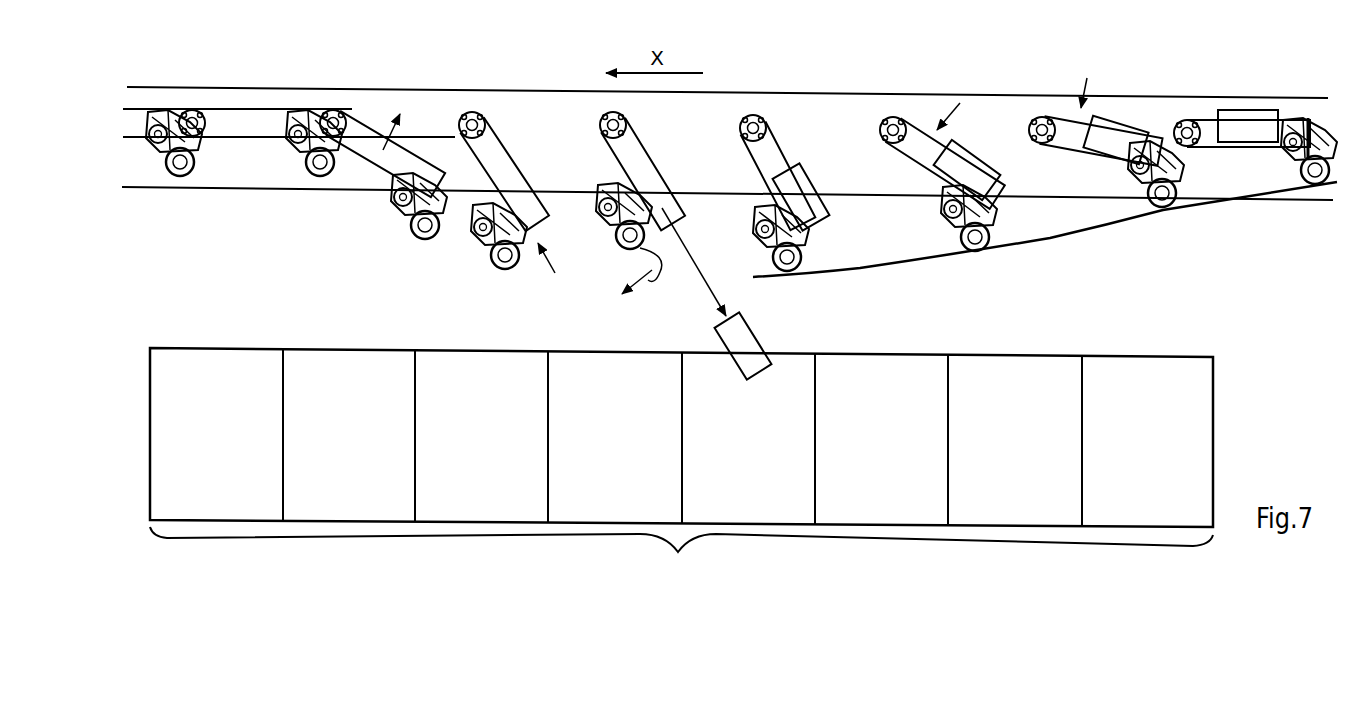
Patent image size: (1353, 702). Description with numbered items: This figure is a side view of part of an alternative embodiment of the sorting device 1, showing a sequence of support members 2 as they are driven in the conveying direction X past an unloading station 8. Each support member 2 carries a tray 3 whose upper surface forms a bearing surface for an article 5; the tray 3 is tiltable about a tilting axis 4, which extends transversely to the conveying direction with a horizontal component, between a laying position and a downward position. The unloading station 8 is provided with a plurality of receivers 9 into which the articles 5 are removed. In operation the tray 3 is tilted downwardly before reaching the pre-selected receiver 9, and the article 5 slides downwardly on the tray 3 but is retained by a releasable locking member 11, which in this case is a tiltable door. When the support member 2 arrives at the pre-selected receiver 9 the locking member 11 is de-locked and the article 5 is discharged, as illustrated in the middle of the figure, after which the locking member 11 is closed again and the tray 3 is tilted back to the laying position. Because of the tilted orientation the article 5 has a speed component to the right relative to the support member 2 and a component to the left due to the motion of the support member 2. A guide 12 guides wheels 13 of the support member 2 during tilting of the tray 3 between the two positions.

The sorting device 1 is at (1255, 81).
The support member 2 is at (779, 121).
The tray 3 is at (787, 162).
The tilting axis 4 is at (340, 120).
The article 5 is at (808, 178).
The unloading station 8 is at (681, 443).
The receiver 9 is at (878, 372).
The locking member 11 is at (663, 257).
The guide 12 is at (860, 270).
The wheels 13 is at (807, 273).